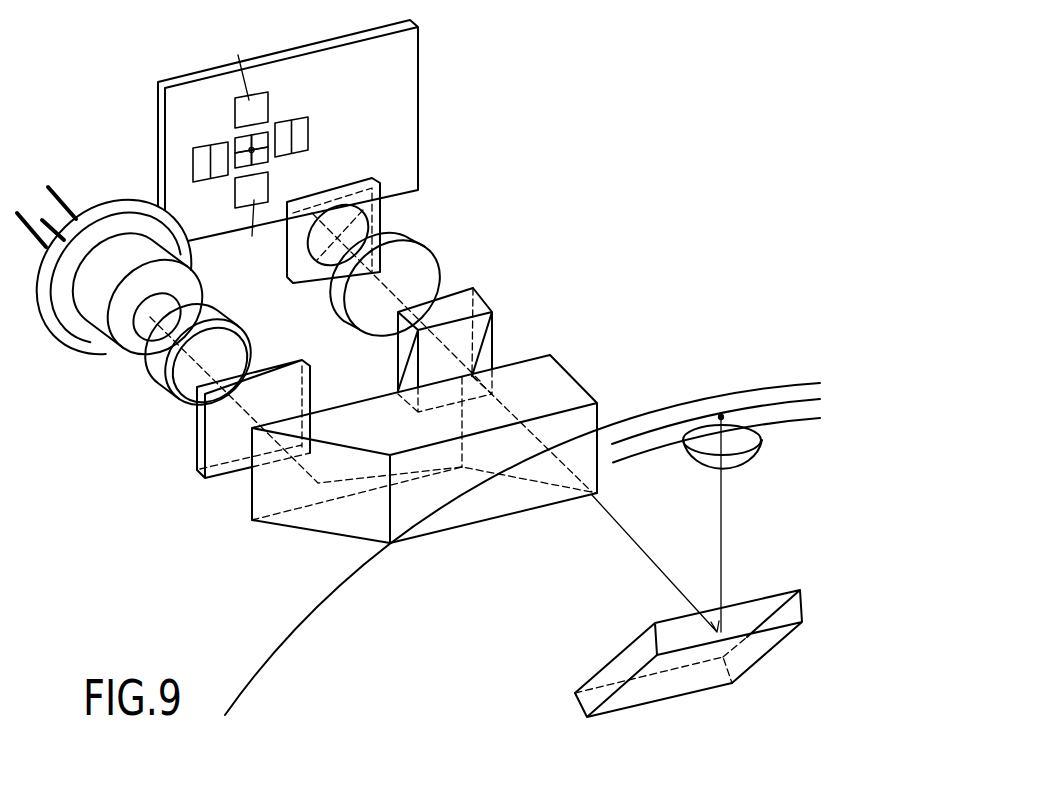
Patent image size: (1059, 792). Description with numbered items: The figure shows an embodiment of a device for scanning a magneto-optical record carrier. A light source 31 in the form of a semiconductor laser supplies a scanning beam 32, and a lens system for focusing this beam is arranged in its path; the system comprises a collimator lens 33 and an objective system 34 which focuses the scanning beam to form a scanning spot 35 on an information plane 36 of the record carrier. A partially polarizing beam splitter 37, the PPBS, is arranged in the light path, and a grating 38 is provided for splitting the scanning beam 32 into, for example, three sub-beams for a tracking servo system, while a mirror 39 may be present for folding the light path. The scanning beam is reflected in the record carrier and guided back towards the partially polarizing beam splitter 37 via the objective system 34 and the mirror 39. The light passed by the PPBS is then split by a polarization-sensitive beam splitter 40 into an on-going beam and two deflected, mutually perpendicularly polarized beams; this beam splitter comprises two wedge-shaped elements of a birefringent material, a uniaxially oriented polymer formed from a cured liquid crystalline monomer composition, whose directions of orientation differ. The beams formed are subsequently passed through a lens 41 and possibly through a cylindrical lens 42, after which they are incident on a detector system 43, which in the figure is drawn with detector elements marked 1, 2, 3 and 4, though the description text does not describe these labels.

The light source 31 is at (80, 348).
The scanning beam 32 is at (127, 360).
The collimator lens 33 is at (167, 403).
The objective system 34 is at (757, 455).
The scanning spot 35 is at (719, 415).
The information plane 36 is at (782, 390).
The partially polarizing beam splitter 37 is at (563, 367).
The grating 38 is at (197, 458).
The mirror 39 is at (780, 593).
The polarization-sensitive beam splitter 40 is at (487, 300).
The lens 41 is at (420, 245).
The cylindrical lens 42 is at (383, 218).
The detector system 43 is at (312, 142).
The detector quadrant 1 is at (236, 140).
The detector quadrant 2 is at (265, 130).
The detector quadrant 3 is at (262, 156).
The detector quadrant 4 is at (240, 165).